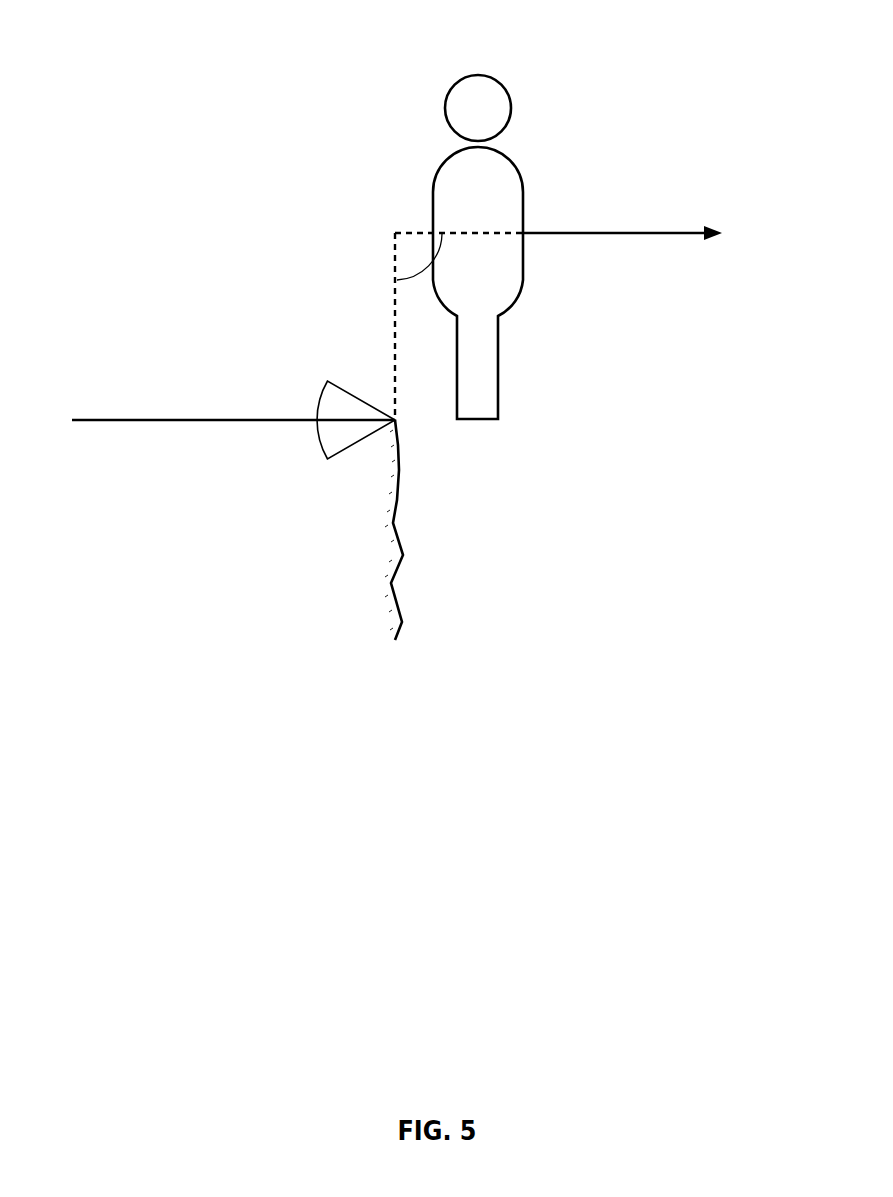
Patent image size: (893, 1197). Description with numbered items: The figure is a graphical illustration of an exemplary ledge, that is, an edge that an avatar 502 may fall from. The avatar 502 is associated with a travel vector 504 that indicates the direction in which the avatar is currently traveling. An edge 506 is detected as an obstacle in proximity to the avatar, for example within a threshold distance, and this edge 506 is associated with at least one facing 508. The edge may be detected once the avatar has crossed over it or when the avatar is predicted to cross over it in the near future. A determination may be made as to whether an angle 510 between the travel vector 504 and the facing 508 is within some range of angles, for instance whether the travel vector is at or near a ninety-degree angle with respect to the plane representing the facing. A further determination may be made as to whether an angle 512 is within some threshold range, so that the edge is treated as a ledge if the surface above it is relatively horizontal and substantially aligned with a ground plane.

The avatar 502 is at (504, 77).
The travel vector 504 is at (558, 221).
The edge 506 is at (403, 424).
The facing 508 is at (400, 525).
The angle 510 is at (434, 326).
The angle 512 is at (330, 417).